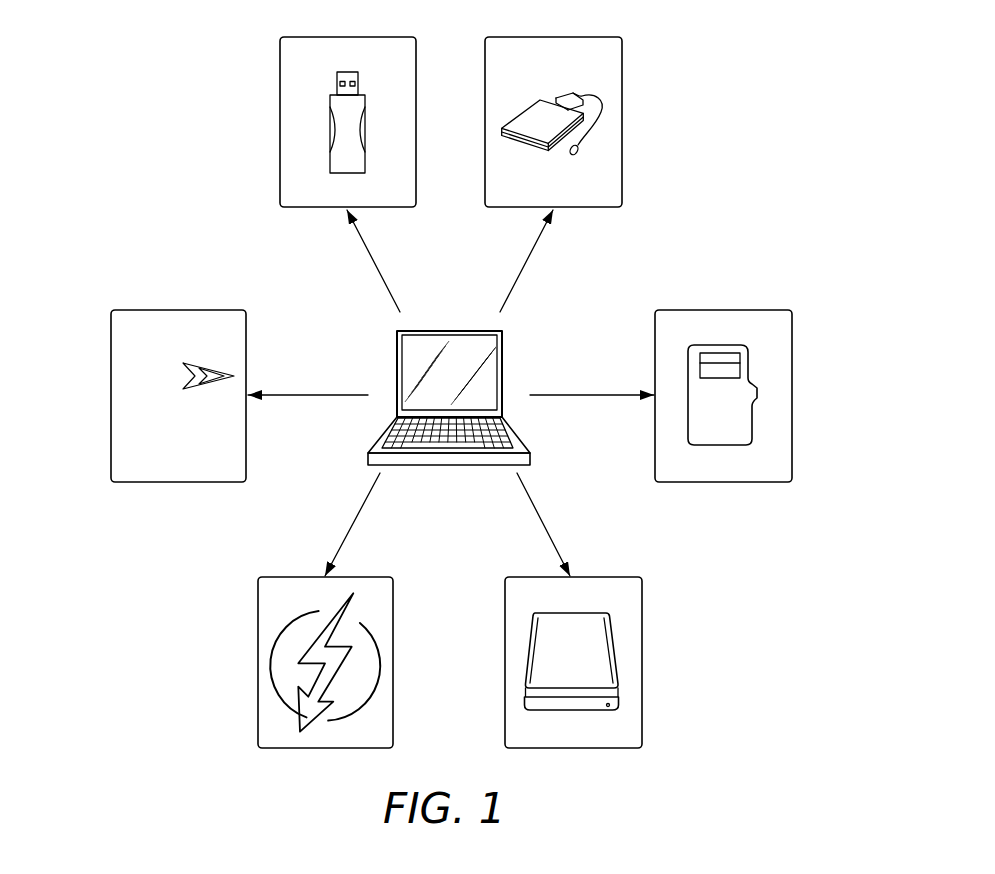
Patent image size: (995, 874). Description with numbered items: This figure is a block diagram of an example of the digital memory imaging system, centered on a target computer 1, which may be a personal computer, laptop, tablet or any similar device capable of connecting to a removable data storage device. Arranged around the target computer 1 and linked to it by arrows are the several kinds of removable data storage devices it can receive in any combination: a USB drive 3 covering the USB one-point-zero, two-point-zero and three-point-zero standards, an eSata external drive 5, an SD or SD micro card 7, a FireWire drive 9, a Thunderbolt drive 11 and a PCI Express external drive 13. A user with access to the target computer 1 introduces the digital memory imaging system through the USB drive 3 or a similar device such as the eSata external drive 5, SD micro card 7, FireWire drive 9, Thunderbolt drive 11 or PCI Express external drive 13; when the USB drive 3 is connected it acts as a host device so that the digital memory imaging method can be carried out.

The target computer 1 is at (456, 380).
The USB drive 3 is at (280, 118).
The eSata external drive 5 is at (622, 119).
The SD and SD micro card 7 is at (792, 393).
The FireWire drive 9 is at (642, 660).
The Thunderbolt drive 11 is at (258, 660).
The PCI Express external drive 13 is at (111, 393).